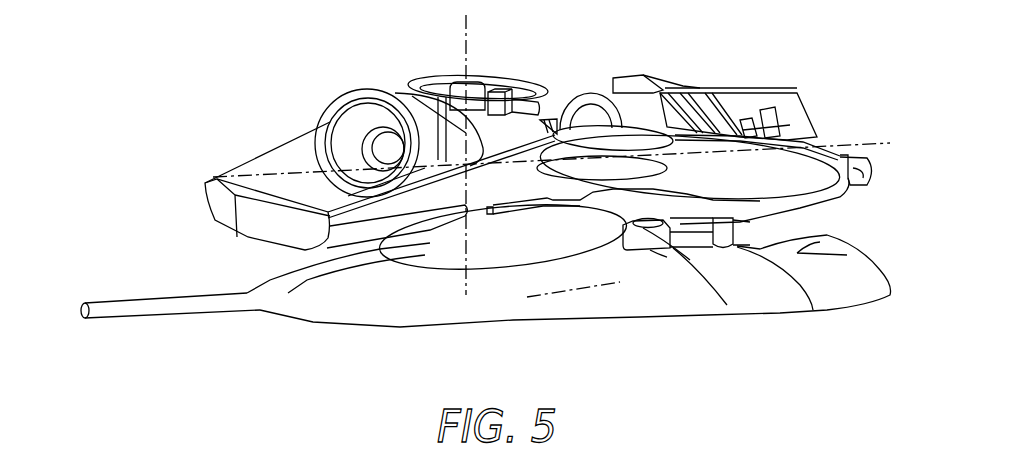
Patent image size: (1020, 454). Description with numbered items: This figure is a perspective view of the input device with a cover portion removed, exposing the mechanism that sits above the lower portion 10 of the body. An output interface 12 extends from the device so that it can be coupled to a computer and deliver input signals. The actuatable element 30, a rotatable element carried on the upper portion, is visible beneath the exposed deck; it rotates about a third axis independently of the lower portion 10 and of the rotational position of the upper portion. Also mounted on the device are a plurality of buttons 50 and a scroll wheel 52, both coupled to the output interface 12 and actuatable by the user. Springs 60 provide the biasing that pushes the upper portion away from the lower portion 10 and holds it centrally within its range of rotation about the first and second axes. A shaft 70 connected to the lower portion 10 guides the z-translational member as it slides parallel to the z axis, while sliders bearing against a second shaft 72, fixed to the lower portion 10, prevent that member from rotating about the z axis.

The lower portion 10 is at (373, 300).
The output interface 12 is at (177, 310).
The actuatable element 30 is at (533, 245).
The buttons 50 is at (406, 82).
The scroll wheel 52 is at (333, 117).
The springs 60 is at (494, 83).
The shaft 70 is at (673, 247).
The second shaft 72 is at (737, 218).